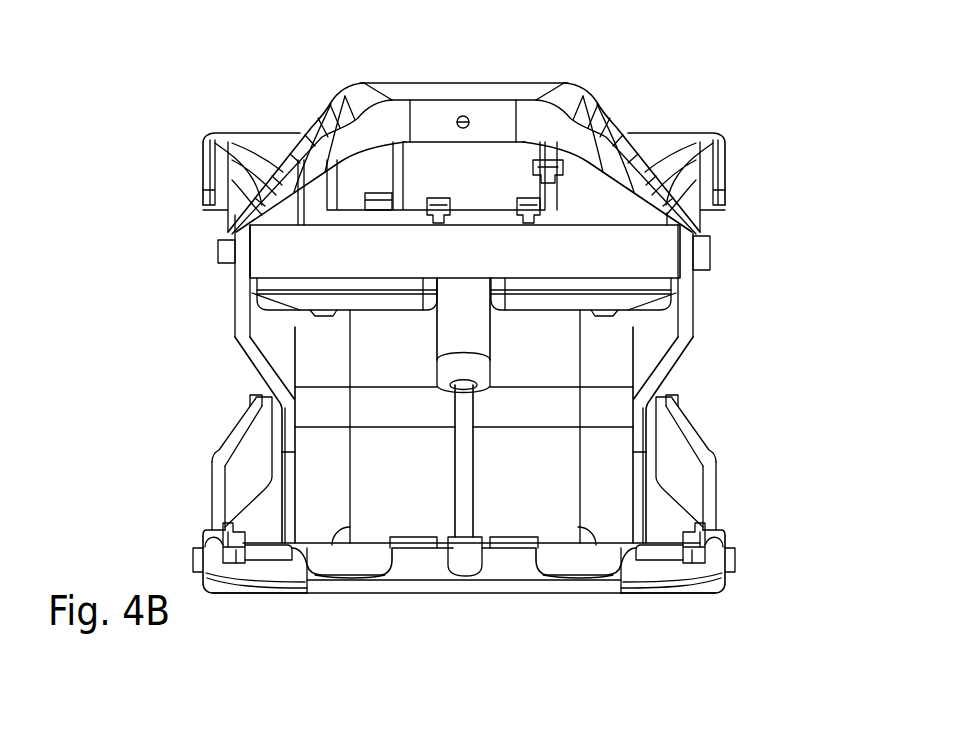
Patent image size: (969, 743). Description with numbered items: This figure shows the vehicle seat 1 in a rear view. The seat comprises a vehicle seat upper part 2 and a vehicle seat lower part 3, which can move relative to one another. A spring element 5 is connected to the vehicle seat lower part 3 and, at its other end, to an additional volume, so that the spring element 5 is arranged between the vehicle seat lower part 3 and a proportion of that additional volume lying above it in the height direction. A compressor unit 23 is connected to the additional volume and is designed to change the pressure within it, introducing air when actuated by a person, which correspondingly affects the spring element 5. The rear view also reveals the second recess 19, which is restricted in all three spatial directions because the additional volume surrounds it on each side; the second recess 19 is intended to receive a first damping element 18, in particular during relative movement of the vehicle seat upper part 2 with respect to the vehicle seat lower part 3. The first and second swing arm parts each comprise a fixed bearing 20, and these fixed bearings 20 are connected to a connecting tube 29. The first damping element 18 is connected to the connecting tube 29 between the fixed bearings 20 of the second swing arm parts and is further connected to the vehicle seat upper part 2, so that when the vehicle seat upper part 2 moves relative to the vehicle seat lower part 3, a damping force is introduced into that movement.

The vehicle seat 1 is at (790, 58).
The vehicle seat upper part 2 is at (684, 137).
The vehicle seat lower part 3 is at (727, 590).
The spring element 5 is at (575, 468).
The first damping element 18 is at (473, 322).
The second recess 19 is at (435, 312).
The fixed bearing 20 is at (234, 558).
The compressor unit 23 is at (492, 160).
The connecting tube 29 is at (590, 563).